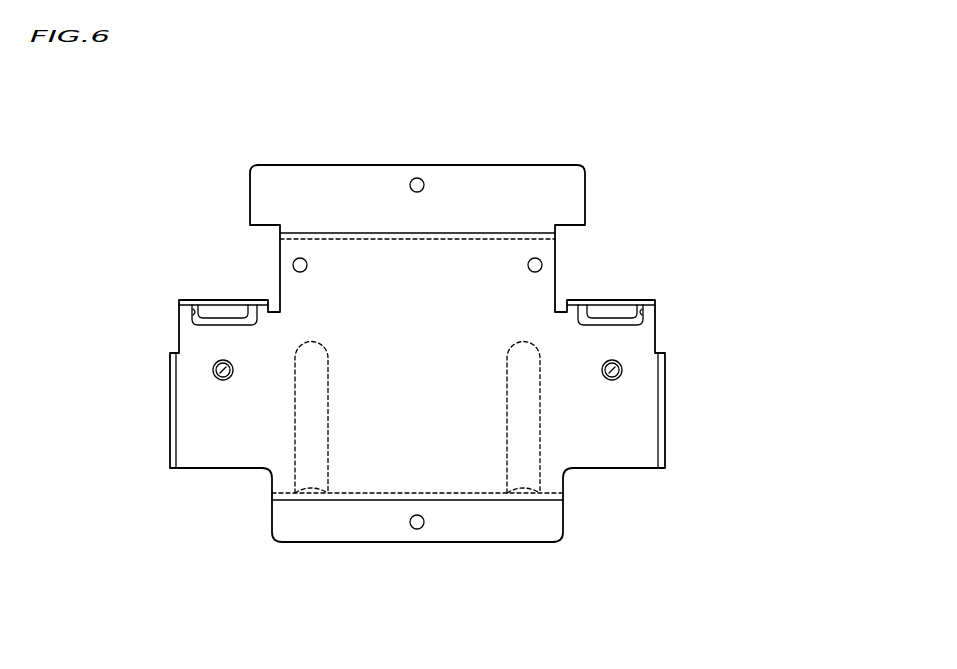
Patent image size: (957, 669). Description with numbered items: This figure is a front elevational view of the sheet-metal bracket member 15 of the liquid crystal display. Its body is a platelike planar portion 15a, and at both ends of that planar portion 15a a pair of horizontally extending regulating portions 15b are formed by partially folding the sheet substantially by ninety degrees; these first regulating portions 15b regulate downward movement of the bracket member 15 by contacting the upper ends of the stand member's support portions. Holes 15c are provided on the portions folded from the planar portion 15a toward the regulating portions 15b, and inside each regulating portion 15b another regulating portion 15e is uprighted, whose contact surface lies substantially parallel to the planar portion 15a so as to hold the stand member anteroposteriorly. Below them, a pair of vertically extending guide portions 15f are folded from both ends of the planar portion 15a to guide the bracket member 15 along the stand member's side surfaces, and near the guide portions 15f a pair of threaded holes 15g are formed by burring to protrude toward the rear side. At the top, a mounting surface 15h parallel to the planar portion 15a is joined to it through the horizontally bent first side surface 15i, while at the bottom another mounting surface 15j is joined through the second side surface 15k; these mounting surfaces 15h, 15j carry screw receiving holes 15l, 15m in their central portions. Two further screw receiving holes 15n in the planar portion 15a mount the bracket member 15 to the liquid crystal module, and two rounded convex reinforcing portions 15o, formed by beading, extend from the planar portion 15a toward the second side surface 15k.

The bracket member 15 is at (644, 87).
The planar portion 15a is at (375, 295).
The regulating portions 15b is at (207, 298).
The holes 15c is at (182, 297).
The regulating portions 15e is at (225, 313).
The guide portions 15f is at (167, 403).
The threaded holes 15g is at (215, 363).
The mounting surface 15h is at (497, 183).
The first side surface 15i is at (327, 232).
The mounting surface 15j is at (484, 520).
The second side surface 15k is at (323, 500).
The screw receiving hole 15l is at (420, 178).
The screw receiving hole 15m is at (418, 529).
The screw receiving holes 15n is at (300, 258).
The reinforcing portions 15o is at (308, 423).